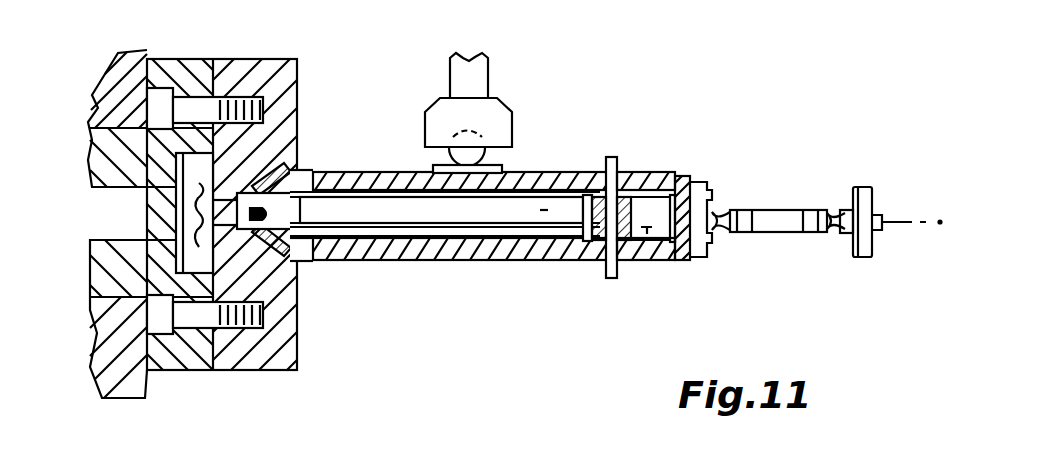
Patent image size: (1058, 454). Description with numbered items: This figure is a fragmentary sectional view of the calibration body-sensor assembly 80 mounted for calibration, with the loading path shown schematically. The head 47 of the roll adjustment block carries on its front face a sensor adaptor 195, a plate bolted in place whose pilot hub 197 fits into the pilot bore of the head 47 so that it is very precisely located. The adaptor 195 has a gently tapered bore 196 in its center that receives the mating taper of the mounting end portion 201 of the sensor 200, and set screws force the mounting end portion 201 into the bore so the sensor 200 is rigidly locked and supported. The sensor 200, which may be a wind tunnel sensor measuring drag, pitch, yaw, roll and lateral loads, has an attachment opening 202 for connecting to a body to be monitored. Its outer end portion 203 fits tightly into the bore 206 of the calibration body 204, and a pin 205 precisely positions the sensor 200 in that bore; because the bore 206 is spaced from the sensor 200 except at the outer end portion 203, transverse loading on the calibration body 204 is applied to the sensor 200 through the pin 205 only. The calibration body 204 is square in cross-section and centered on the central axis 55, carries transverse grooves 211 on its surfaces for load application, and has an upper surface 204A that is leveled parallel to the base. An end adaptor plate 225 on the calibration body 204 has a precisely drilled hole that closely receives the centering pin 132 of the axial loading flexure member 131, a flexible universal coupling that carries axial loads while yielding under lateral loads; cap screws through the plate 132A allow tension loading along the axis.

The head 47 is at (175, 58).
The sensor adaptor 195 is at (297, 74).
The pilot hub 197 is at (187, 185).
The tapered bore 196 is at (293, 232).
The mounting end portion 201 is at (284, 200).
The sensor 200 is at (343, 190).
The transverse grooves 211 is at (543, 170).
The calibration body-sensor assembly 80 is at (463, 237).
The bore 206 is at (512, 222).
The calibration body 204 is at (548, 172).
The upper surface 204A is at (395, 168).
The pin 205 is at (611, 157).
The outer end portion 203 is at (634, 262).
The attachment opening 202 is at (652, 172).
The end adaptor plate 225 is at (686, 175).
The centering pin 132 is at (680, 260).
The plate 132A is at (703, 183).
The axial loading flexure member 131 is at (778, 212).
The central axis 55 is at (900, 220).